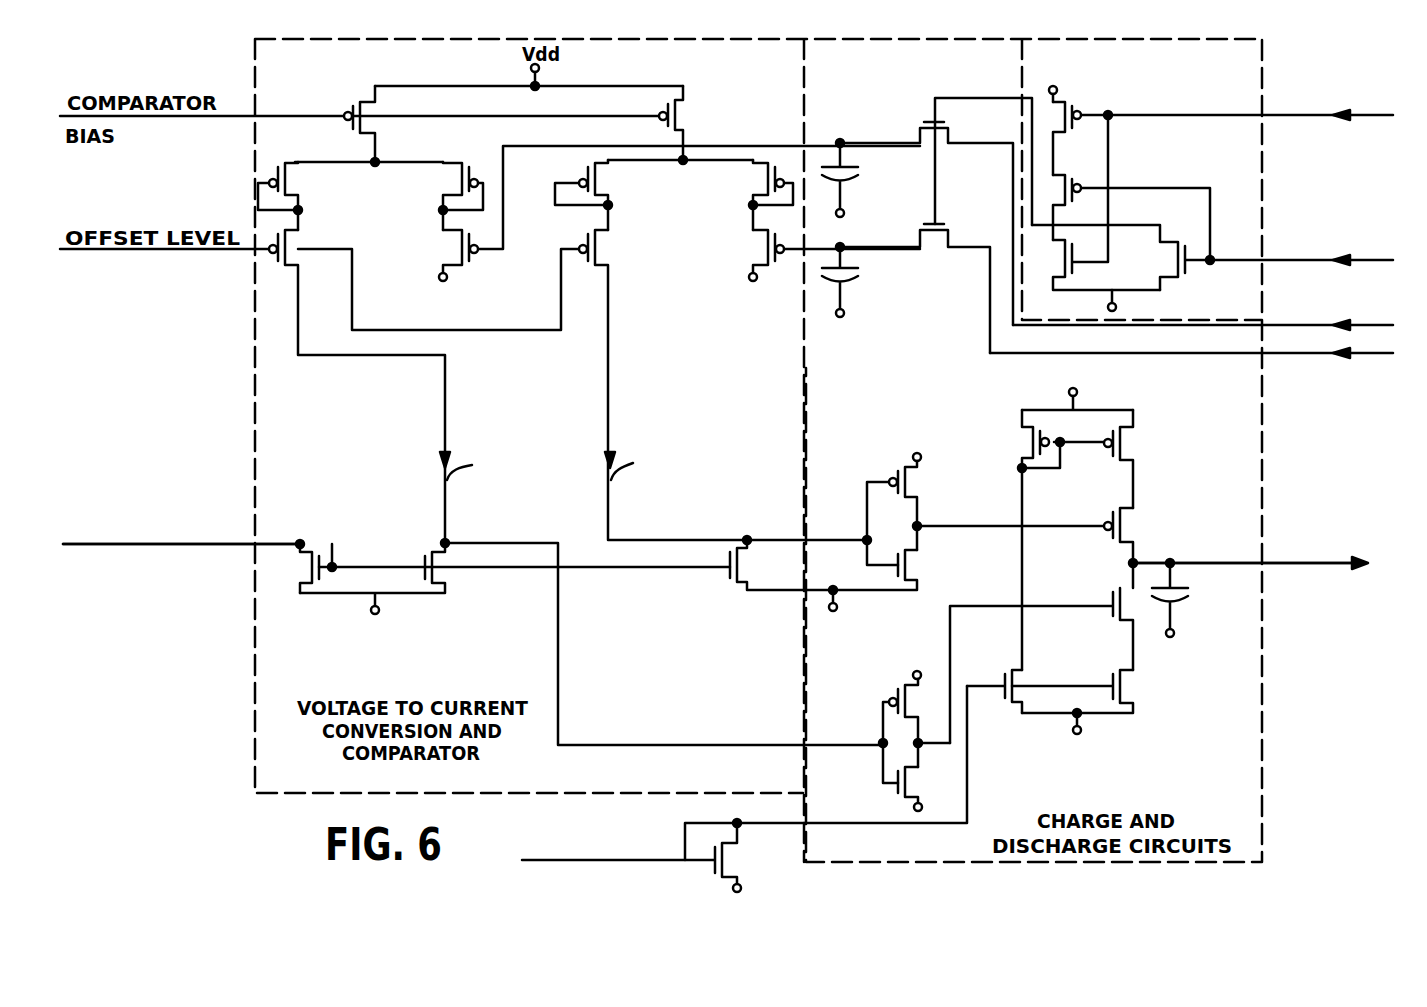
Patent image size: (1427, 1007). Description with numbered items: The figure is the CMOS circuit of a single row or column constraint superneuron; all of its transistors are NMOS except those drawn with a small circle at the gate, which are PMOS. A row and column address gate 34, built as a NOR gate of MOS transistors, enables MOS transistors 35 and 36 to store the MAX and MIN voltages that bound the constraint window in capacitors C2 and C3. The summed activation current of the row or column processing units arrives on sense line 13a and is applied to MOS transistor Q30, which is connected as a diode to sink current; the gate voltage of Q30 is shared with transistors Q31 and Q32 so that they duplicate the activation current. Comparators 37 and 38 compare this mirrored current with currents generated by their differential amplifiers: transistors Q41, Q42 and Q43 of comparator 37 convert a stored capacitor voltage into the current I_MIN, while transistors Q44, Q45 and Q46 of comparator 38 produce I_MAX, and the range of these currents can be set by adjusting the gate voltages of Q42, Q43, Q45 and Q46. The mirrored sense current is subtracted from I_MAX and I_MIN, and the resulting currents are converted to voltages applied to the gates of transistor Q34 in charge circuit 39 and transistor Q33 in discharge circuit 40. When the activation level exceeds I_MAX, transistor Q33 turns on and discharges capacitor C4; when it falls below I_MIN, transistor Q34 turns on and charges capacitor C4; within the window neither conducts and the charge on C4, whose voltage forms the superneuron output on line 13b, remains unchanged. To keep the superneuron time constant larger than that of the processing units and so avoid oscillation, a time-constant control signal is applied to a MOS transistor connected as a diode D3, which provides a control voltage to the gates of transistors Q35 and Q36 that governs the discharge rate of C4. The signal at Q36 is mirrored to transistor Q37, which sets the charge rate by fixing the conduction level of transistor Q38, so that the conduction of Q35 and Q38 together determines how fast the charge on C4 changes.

The row and column address gate 34 is at (1247, 165).
The MOS transistor 35 is at (950, 234).
The MOS transistor 36 is at (916, 128).
The comparator 37 is at (681, 360).
The comparator 38 is at (387, 428).
The charge circuit 39 is at (1145, 476).
The discharge circuit 40 is at (1150, 656).
The sense line 13a is at (181, 532).
The output line 13b is at (1248, 562).
The MOS transistor Q30 is at (299, 566).
The transistor Q31 is at (397, 589).
The transistor Q32 is at (795, 586).
The transistor Q33 is at (1041, 665).
The transistor Q34 is at (1135, 548).
The transistor Q35 is at (1088, 713).
The transistor Q36 is at (1010, 703).
The transistor Q37 is at (1044, 540).
The transistor Q38 is at (1134, 459).
The MOS transistor Q41 is at (687, 123).
The MOS transistor Q42 is at (820, 266).
The MOS transistor Q43 is at (663, 385).
The MOS transistor Q44 is at (346, 122).
The MOS transistor Q45 is at (665, 224).
The MOS transistor Q46 is at (424, 386).
The capacitor C2 is at (857, 292).
The capacitor C3 is at (857, 189).
The capacitor C4 is at (1186, 609).
The diode-connected MOS transistor D3 is at (650, 860).